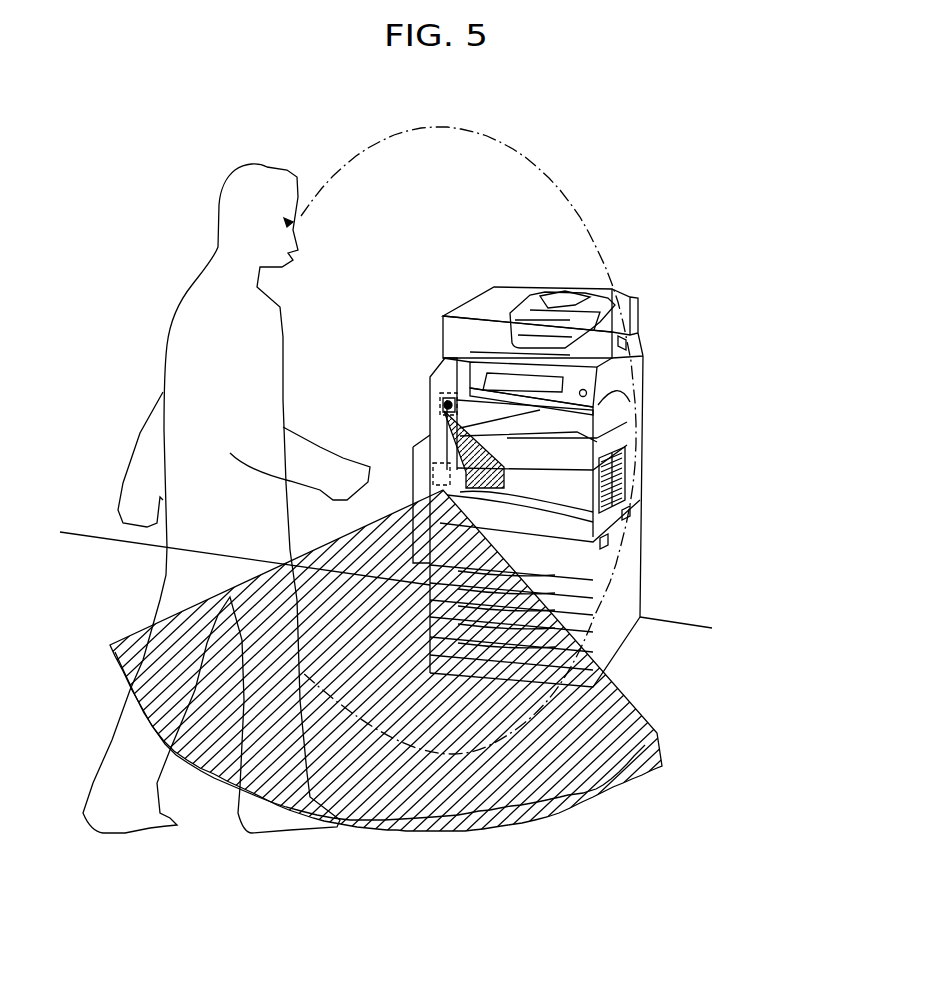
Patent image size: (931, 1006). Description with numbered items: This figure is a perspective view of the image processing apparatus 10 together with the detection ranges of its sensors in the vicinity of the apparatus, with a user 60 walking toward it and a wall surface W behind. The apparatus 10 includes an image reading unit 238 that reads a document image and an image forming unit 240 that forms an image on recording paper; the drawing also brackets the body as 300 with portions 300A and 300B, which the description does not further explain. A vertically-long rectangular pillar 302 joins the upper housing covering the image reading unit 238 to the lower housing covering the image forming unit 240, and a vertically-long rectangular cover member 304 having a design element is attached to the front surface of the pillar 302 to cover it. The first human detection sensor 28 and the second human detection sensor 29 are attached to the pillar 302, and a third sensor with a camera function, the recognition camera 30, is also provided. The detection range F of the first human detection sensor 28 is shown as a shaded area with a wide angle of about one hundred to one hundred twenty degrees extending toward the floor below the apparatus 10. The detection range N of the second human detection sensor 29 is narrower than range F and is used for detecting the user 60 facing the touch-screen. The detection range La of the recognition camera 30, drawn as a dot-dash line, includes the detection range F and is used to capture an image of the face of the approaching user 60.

The image processing apparatus 10 is at (576, 469).
The first human detection sensor 28 is at (437, 485).
The second human detection sensor 29 is at (443, 398).
The recognition camera 30 is at (449, 402).
The user 60 is at (236, 230).
The image reading unit 238 is at (618, 380).
The image forming unit 240 is at (568, 497).
The apparatus body 300 is at (626, 487).
The upper unit 300A is at (601, 452).
The lower unit 300B is at (596, 562).
The pillar 302 is at (427, 458).
The cover member 304 is at (417, 462).
The detection range of recognition camera La is at (537, 165).
The detection range of second human detection sensor N is at (582, 544).
The wall surface W is at (680, 596).
The detection range of first human detection sensor F is at (628, 768).